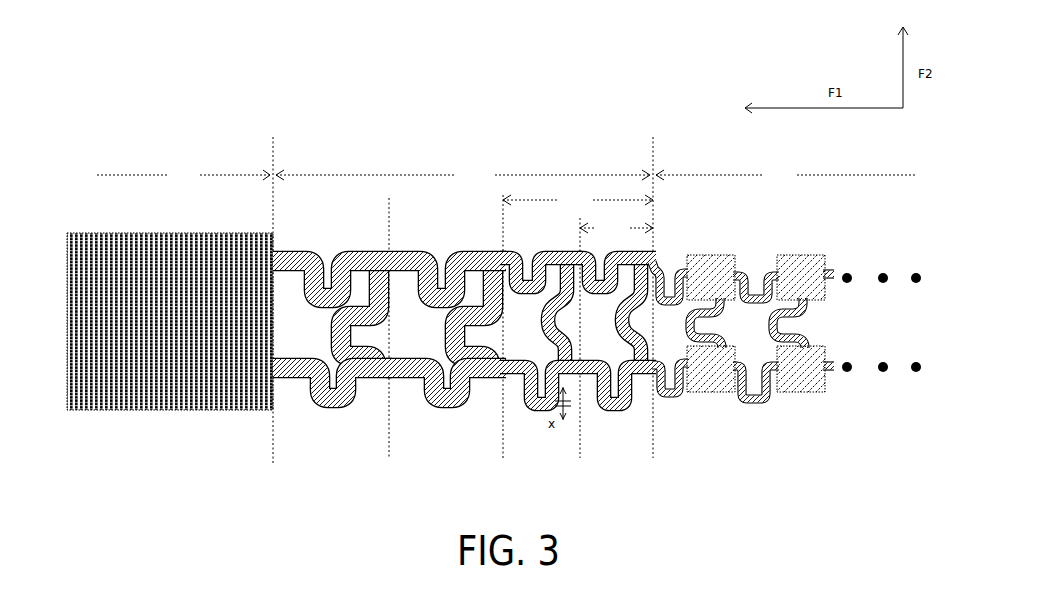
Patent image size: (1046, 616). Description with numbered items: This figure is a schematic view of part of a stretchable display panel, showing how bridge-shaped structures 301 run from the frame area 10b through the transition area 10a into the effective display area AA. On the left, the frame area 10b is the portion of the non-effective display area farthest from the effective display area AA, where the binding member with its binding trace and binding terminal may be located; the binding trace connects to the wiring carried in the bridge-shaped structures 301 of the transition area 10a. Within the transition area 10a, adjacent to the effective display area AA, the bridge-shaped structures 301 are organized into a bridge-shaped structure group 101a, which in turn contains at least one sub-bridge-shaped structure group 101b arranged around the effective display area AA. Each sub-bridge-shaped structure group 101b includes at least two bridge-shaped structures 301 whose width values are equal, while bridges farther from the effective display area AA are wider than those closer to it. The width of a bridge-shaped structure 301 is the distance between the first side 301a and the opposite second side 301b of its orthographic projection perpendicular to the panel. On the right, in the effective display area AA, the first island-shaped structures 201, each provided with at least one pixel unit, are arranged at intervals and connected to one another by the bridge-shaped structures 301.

The transition area 10a is at (461, 268).
The frame area 10b is at (170, 289).
The bridge-shaped structure group 101a is at (576, 299).
The sub-bridge-shaped structure group 101b is at (617, 313).
The first island-shaped structure 201 is at (702, 392).
The bridge-shaped structure 301 is at (757, 402).
The first side 301a is at (457, 413).
The second side 301b is at (443, 413).
The effective display area AA is at (785, 176).